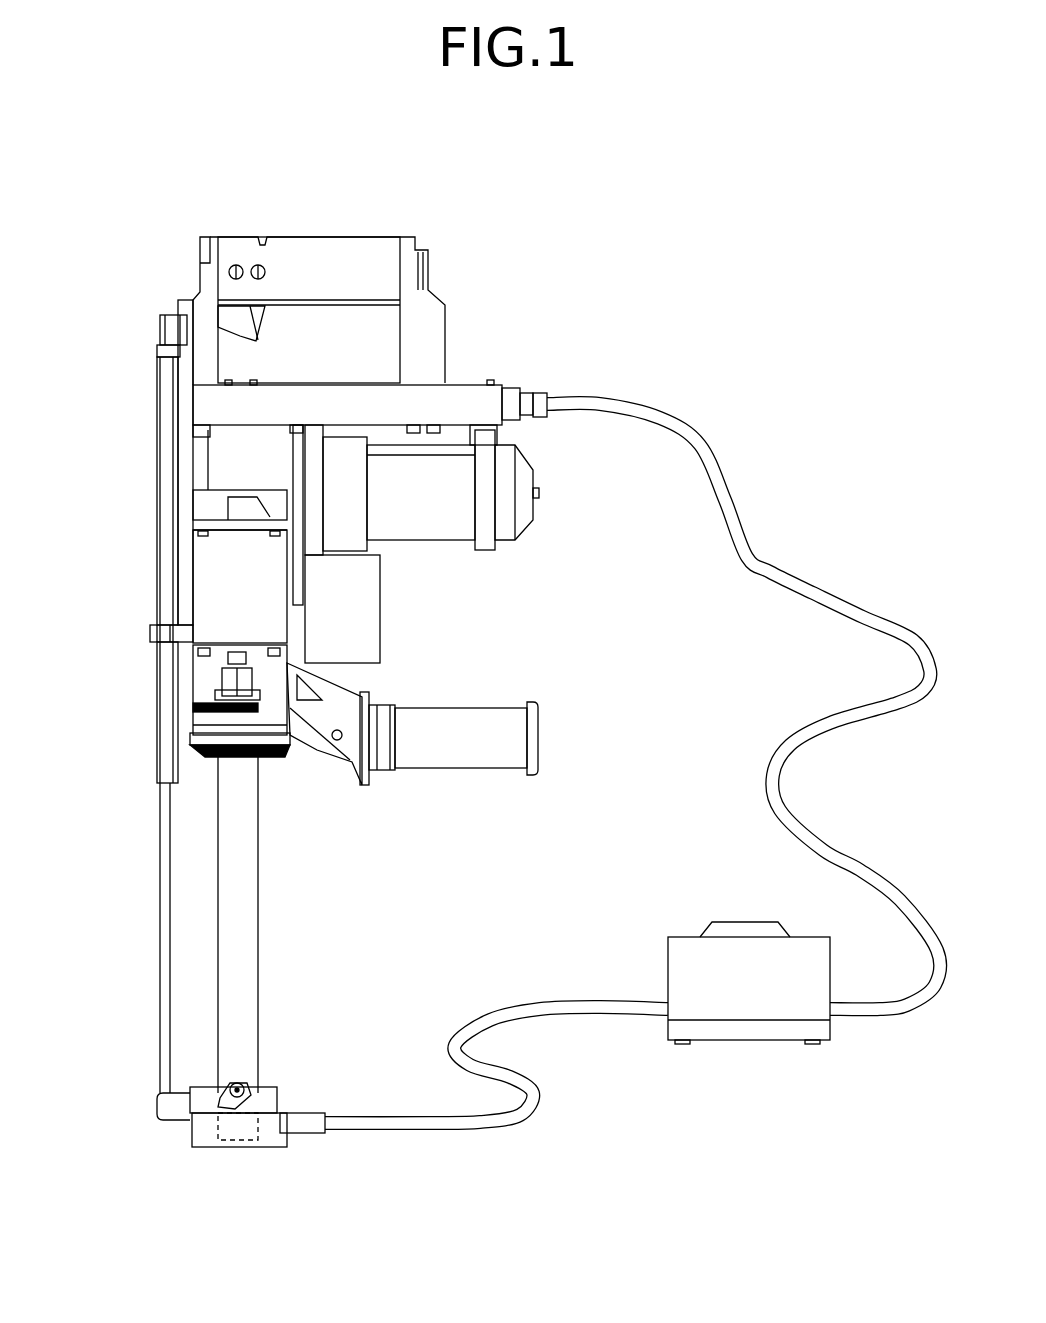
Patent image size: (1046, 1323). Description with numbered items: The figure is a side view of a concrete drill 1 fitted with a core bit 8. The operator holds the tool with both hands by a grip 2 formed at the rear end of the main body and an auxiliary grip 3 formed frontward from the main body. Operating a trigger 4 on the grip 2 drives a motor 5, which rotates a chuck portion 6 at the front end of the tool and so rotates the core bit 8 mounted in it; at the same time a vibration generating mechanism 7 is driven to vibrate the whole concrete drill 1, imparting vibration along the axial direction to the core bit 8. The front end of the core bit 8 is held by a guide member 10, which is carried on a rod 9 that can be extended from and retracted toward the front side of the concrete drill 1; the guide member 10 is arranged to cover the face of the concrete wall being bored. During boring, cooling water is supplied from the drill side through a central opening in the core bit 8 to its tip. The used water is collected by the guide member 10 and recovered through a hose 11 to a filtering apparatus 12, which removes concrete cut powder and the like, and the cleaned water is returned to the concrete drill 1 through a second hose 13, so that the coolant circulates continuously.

The concrete drill 1 is at (570, 288).
The grip 2 is at (303, 238).
The auxiliary grip 3 is at (500, 780).
The trigger 4 is at (262, 310).
The motor 5 is at (530, 530).
The chuck portion 6 is at (193, 725).
The vibration generating mechanism 7 is at (380, 655).
The core bit 8 is at (258, 868).
The rod 9 is at (160, 950).
The guide member 10 is at (163, 1135).
The hose 11 is at (522, 1125).
The filtering apparatus 12 is at (760, 1042).
The hose 13 is at (790, 565).